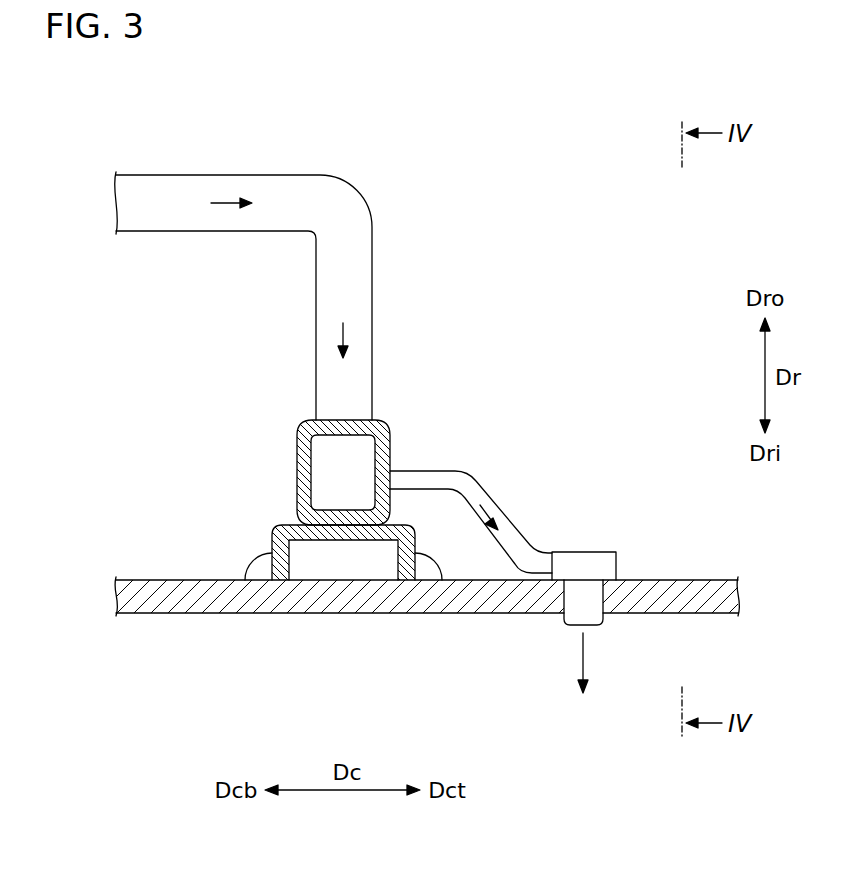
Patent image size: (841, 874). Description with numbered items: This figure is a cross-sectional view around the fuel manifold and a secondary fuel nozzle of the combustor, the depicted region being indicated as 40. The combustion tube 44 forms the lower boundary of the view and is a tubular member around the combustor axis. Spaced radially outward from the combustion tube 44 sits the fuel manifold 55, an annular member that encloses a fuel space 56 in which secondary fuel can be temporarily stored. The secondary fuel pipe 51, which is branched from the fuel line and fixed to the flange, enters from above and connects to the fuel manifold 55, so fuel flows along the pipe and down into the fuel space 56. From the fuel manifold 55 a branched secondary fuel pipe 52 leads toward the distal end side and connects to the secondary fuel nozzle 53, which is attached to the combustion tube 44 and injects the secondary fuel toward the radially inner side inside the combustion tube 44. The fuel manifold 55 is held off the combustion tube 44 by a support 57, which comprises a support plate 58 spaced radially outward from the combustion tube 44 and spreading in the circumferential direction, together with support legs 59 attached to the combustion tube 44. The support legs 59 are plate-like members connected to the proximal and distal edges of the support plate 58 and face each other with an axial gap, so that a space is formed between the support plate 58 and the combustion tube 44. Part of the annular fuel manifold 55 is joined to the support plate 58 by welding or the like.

The heat exchange unit 40 is at (527, 158).
The combustion tube 44 is at (168, 596).
The secondary fuel pipe 51 is at (236, 175).
The branched secondary fuel pipe 52 is at (458, 470).
The secondary fuel nozzle 53 is at (585, 552).
The fuel manifold 55 is at (298, 420).
The fuel space 56 is at (362, 457).
The support 57 is at (311, 515).
The support plate 58 is at (297, 523).
The support leg 59 is at (250, 580).